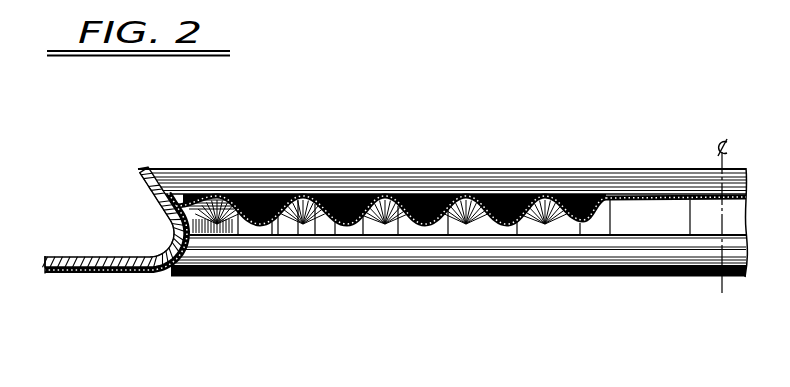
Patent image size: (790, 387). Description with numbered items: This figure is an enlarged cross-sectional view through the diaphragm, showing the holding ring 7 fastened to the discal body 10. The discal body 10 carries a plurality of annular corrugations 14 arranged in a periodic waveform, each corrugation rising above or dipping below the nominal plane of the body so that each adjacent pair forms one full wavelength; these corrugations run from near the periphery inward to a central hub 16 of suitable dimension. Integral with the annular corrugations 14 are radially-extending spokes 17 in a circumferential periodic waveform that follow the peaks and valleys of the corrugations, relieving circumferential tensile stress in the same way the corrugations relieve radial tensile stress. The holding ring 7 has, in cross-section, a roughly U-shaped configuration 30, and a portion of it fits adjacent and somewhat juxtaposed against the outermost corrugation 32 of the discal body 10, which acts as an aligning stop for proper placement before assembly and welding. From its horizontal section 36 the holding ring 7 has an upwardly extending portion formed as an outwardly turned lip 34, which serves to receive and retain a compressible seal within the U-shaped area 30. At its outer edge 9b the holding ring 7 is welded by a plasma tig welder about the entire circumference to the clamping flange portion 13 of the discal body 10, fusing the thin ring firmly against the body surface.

The discal body 10 is at (612, 203).
The holding ring 7 is at (163, 205).
The horizontal section 36 is at (97, 257).
The clamping flange portion 13 is at (97, 273).
The outer edge 9b is at (45, 262).
The U-shaped configuration 30 is at (142, 230).
The outwardly turned lip 34 is at (142, 170).
The spokes 17 is at (464, 194).
The outermost corrugation 32 is at (218, 198).
The central hub 16 is at (633, 196).
The annular corrugations 14 is at (304, 198).